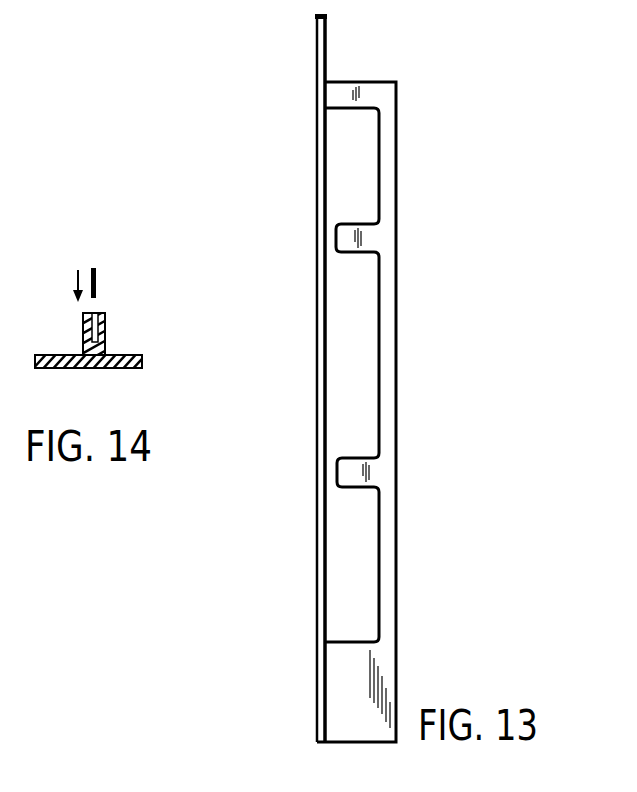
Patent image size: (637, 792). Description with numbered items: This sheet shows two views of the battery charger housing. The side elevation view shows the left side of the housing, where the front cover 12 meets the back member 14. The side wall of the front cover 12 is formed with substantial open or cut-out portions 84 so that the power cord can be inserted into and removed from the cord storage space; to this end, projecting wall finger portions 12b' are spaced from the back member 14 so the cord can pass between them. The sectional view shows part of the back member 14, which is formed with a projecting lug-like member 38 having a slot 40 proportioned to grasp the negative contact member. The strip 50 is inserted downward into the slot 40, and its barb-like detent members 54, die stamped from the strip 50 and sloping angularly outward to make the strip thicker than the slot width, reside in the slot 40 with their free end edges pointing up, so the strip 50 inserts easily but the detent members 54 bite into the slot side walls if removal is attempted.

In FIG. 13, the front cover 12 is at (398, 87).
In FIG. 13, the projecting wall finger portions 12b' is at (312, 356).
In FIG. 13, the back member 14 is at (316, 50).
In FIG. 14, the back member 14 is at (45, 367).
In FIG. 13, the cut-out portions 84 is at (340, 162).
In FIG. 14, the lug-like member 38 is at (95, 355).
In FIG. 14, the slot 40 is at (97, 312).
In FIG. 14, the strip 50 is at (93, 268).
In FIG. 14, the detent members 54 is at (95, 276).